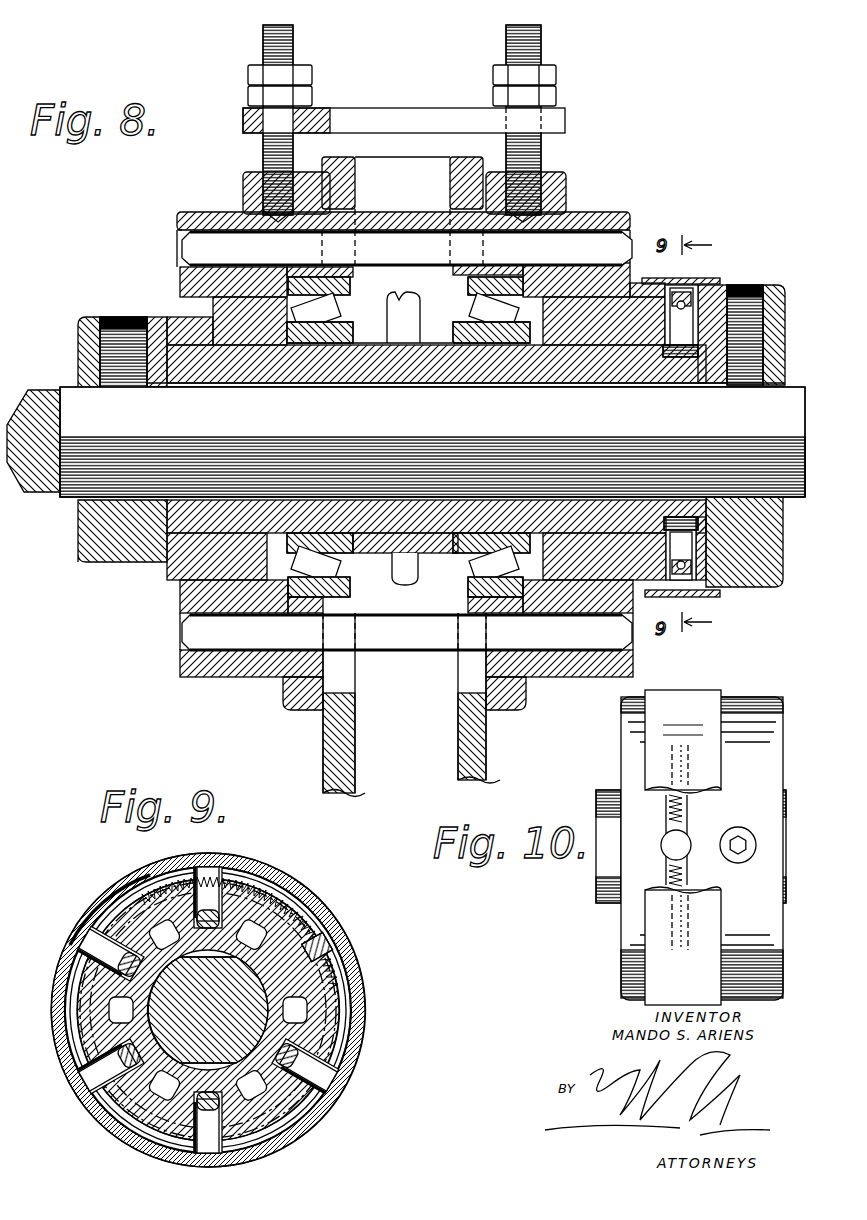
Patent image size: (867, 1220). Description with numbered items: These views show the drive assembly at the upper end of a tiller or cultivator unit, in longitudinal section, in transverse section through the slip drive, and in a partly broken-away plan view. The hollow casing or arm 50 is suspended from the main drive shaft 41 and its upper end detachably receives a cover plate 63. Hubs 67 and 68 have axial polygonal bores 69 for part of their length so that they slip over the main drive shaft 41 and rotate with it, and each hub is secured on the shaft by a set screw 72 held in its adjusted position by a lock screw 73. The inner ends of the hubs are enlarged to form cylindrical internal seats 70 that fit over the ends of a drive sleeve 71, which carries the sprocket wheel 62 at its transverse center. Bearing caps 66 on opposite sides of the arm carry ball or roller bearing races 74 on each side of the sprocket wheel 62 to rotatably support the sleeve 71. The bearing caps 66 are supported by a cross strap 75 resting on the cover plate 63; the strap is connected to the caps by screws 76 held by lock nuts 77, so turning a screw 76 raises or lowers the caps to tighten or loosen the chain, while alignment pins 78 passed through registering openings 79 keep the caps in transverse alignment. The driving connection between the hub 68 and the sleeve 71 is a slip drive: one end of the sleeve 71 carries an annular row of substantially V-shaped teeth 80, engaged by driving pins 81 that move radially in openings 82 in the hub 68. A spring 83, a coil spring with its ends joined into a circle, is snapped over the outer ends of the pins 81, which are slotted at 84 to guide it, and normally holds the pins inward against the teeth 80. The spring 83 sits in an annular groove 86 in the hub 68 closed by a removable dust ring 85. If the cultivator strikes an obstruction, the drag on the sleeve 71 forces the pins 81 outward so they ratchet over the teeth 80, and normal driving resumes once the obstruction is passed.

In FIG. 8, the main drive shaft 41 is at (406, 442).
In FIG. 9, the main drive shaft 41 is at (240, 995).
In FIG. 10, the main drive shaft 41 is at (596, 896).
In FIG. 8, the hollow casing or arm 50 is at (340, 775).
In FIG. 8, the sprocket wheel 62 is at (403, 302).
In FIG. 8, the cover plate 63 is at (462, 165).
In FIG. 8, the bearing caps 66 is at (220, 214).
In FIG. 8, the hub 67 is at (95, 316).
In FIG. 8, the hub 68 is at (780, 285).
In FIG. 10, the hub 68 is at (760, 697).
In FIG. 8, the axial polygonal bores 69 is at (78, 390).
In FIG. 8, the cylindrical internal seats 70 is at (195, 345).
In FIG. 9, the cylindrical internal seats 70 is at (300, 1020).
In FIG. 8, the drive sleeve 71 is at (456, 395).
In FIG. 9, the drive sleeve 71 is at (270, 1105).
In FIG. 8, the set screws 72 is at (108, 390).
In FIG. 8, the lock screws 73 is at (126, 316).
In FIG. 10, the lock screws 73 is at (740, 838).
In FIG. 8, the ball or roller bearing races 74 is at (520, 535).
In FIG. 8, the cross strap 75 is at (563, 122).
In FIG. 8, the screws 76 is at (266, 152).
In FIG. 8, the lock nuts 77 is at (251, 92).
In FIG. 8, the alignment pins 78 is at (407, 441).
In FIG. 8, the registering openings 79 is at (200, 212).
In FIG. 8, the V-shaped teeth 80 is at (650, 376).
In FIG. 9, the V-shaped teeth 80 is at (283, 915).
In FIG. 8, the driving pins 81 is at (681, 432).
In FIG. 9, the driving pins 81 is at (212, 885).
In FIG. 10, the driving pins 81 is at (690, 840).
In FIG. 8, the openings 82 is at (683, 360).
In FIG. 9, the openings 82 is at (160, 885).
In FIG. 8, the spring 83 is at (690, 280).
In FIG. 9, the spring 83 is at (300, 915).
In FIG. 10, the spring 83 is at (669, 815).
In FIG. 8, the slots 84 is at (668, 600).
In FIG. 9, the slots 84 is at (340, 945).
In FIG. 10, the slots 84 is at (668, 848).
In FIG. 8, the removable dust ring 85 is at (690, 284).
In FIG. 9, the removable dust ring 85 is at (95, 905).
In FIG. 10, the removable dust ring 85 is at (692, 690).
In FIG. 8, the annular groove 86 is at (695, 284).
In FIG. 9, the annular groove 86 is at (270, 880).
In FIG. 10, the annular groove 86 is at (685, 868).